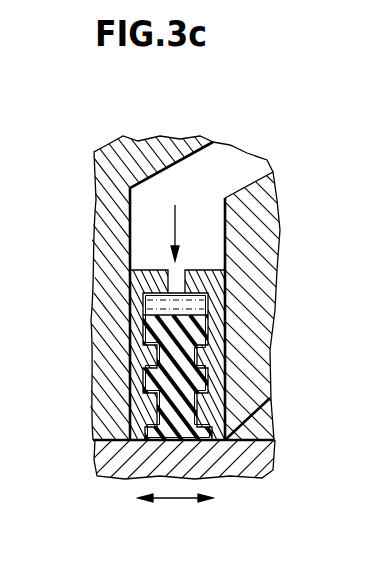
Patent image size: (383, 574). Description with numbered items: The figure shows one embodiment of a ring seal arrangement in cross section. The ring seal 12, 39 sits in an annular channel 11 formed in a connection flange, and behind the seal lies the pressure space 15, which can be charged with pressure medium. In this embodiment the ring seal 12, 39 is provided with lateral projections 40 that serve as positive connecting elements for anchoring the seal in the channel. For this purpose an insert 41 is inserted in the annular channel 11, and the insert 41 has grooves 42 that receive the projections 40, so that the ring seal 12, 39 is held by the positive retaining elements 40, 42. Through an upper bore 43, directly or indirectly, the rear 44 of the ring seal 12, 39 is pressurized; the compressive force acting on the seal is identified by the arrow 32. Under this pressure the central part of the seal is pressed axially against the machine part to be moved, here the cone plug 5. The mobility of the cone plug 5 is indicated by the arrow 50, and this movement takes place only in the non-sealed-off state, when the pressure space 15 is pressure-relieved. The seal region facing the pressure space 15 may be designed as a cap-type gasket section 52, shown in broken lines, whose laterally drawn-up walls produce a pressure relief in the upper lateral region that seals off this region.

The pressure space 15 is at (222, 165).
The annular channel 11 is at (215, 231).
The arrow indicating compressive force 32 is at (178, 219).
The cap-type gasket section 52 is at (205, 303).
The lateral projections 40 is at (208, 336).
The ring seal 12 is at (282, 409).
The ring seal 39 is at (268, 394).
The cone plug 5 is at (250, 463).
The upper bore 43 is at (130, 274).
The rear of the ring seal 44 is at (158, 312).
The insert 41 is at (150, 358).
The grooves 42 is at (145, 384).
The arrow indicating mobility 50 is at (178, 501).